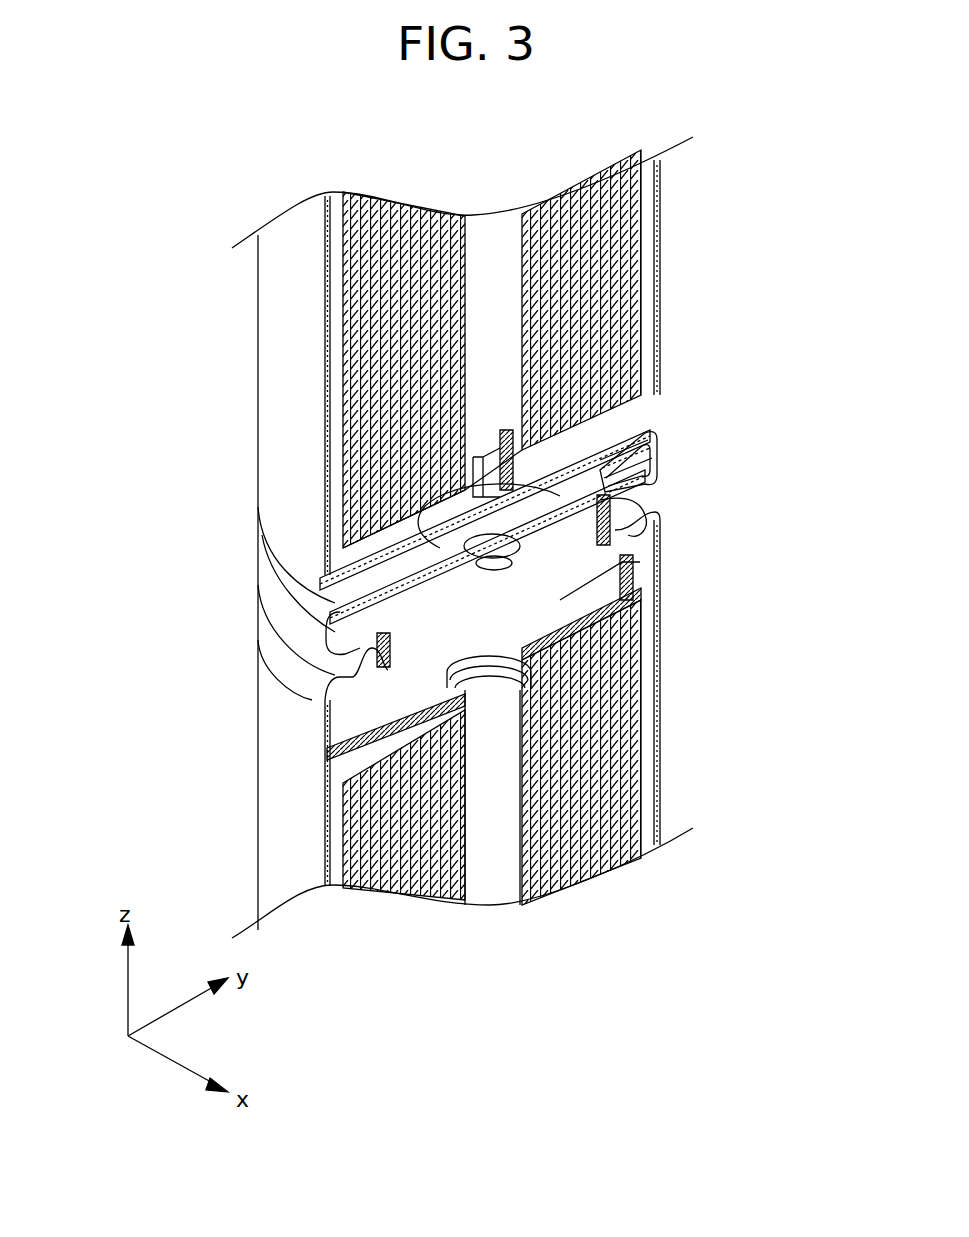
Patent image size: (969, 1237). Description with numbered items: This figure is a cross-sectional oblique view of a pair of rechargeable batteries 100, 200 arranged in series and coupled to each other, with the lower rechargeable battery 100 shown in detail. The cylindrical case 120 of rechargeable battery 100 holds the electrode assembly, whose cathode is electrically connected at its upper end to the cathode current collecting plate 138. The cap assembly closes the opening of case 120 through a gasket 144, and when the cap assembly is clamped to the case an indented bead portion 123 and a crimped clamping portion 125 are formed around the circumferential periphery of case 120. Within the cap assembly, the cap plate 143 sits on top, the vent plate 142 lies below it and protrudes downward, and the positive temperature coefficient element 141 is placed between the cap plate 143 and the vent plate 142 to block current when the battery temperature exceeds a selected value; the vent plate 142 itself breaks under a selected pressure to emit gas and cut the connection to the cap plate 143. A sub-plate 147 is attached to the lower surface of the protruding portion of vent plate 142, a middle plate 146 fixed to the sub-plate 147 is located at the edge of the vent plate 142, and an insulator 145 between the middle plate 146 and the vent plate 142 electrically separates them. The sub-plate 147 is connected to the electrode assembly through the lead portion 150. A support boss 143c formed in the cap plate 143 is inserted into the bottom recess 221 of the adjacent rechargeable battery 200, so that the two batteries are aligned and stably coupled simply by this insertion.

The rechargeable battery 100 is at (670, 735).
The adjacent rechargeable battery 200 is at (670, 240).
The case 120 is at (270, 782).
The indented bead portion 123 is at (330, 668).
The crimped clamping portion 125 is at (330, 630).
The cathode current collecting plate 138 is at (343, 720).
The positive temperature coefficient element 141 is at (657, 437).
The vent plate 142 is at (657, 455).
The cap plate 143 is at (625, 428).
The support boss 143c is at (345, 512).
The gasket 144 is at (657, 477).
The insulator 145 is at (650, 507).
The middle plate 146 is at (630, 533).
The sub-plate 147 is at (650, 553).
The lead portion 150 is at (640, 563).
The bottom recess 221 is at (500, 432).